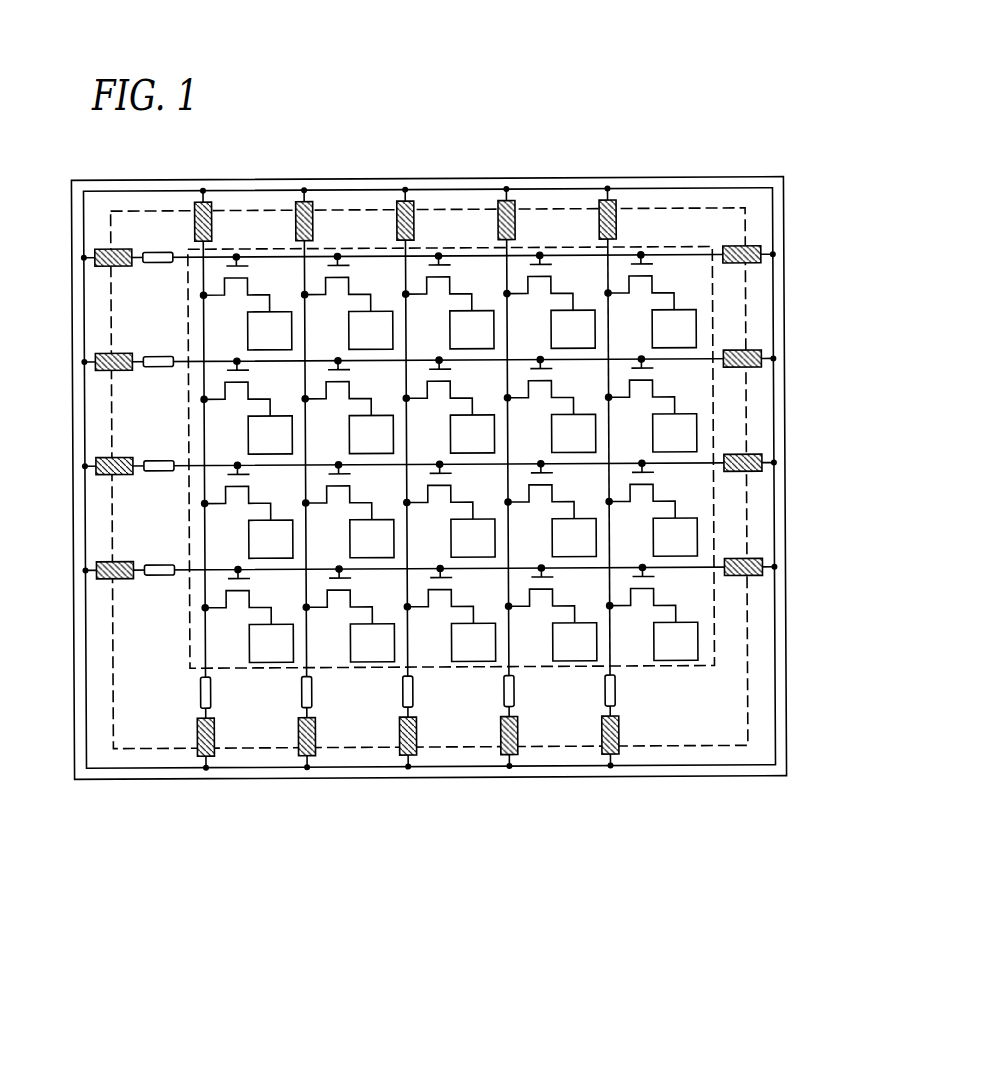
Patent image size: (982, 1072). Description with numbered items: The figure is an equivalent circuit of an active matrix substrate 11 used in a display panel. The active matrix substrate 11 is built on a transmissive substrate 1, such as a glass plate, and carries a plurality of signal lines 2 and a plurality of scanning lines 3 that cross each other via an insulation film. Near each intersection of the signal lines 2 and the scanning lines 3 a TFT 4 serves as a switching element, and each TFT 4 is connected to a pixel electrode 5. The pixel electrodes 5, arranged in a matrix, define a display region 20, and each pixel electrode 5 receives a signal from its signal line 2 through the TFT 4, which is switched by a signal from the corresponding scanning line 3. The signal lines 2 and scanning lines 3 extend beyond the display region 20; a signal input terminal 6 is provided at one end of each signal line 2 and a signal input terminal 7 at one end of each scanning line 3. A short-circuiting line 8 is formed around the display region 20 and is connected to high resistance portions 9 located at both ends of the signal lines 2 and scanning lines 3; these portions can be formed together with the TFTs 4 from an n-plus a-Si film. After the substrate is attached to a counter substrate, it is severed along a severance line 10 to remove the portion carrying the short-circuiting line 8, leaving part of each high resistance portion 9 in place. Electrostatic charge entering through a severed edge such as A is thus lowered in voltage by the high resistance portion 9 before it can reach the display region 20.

The transmissive substrate 1 is at (783, 210).
The signal lines 2 is at (609, 242).
The scanning lines 3 is at (695, 253).
The TFTs 4 is at (651, 272).
The pixel electrodes 5 is at (695, 328).
The signal input terminal 6 is at (199, 693).
The signal input terminal 7 is at (154, 356).
The short-circuiting line 8 is at (774, 423).
The high resistance portions 9 is at (107, 457).
The severance line 10 is at (534, 210).
The active matrix substrate 11 is at (200, 867).
The display region 20 is at (460, 667).
The severed substrate edge A is at (415, 210).